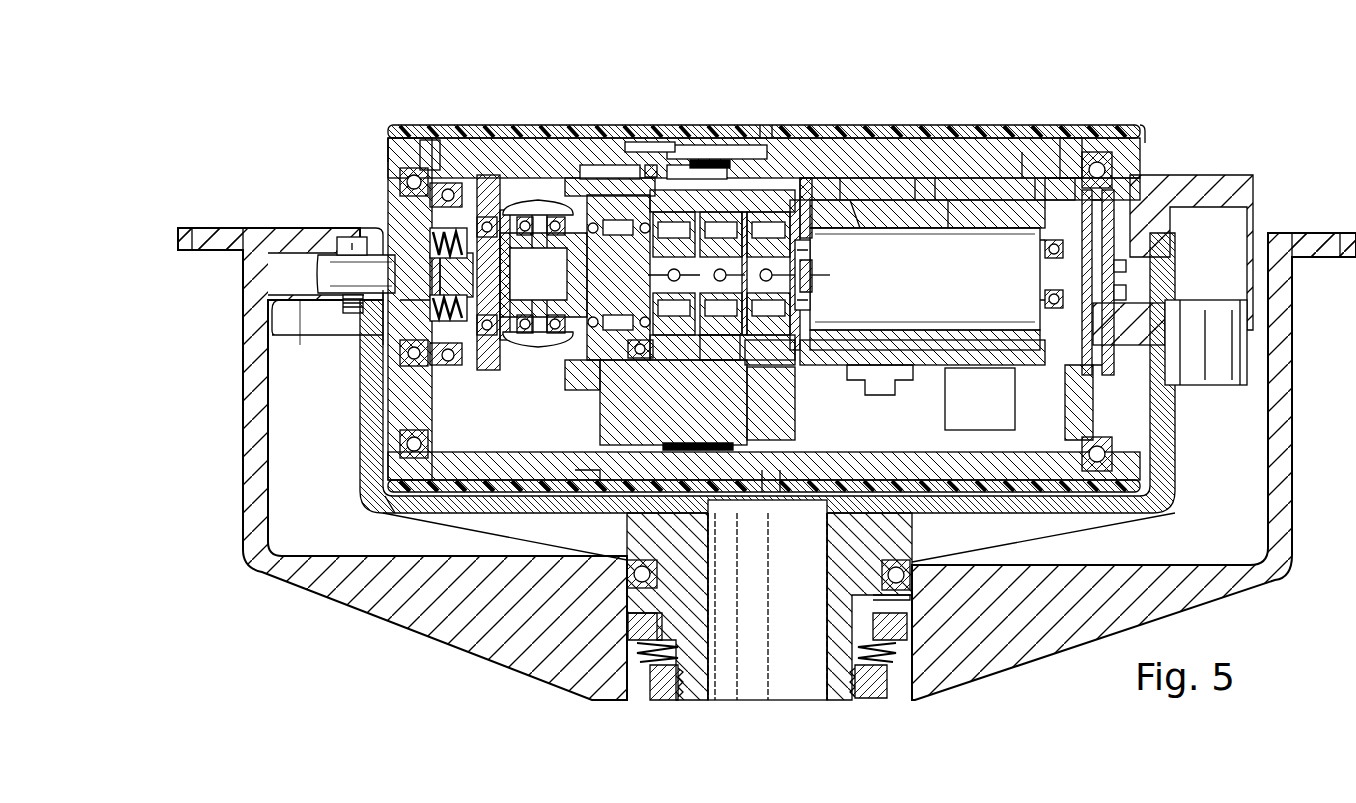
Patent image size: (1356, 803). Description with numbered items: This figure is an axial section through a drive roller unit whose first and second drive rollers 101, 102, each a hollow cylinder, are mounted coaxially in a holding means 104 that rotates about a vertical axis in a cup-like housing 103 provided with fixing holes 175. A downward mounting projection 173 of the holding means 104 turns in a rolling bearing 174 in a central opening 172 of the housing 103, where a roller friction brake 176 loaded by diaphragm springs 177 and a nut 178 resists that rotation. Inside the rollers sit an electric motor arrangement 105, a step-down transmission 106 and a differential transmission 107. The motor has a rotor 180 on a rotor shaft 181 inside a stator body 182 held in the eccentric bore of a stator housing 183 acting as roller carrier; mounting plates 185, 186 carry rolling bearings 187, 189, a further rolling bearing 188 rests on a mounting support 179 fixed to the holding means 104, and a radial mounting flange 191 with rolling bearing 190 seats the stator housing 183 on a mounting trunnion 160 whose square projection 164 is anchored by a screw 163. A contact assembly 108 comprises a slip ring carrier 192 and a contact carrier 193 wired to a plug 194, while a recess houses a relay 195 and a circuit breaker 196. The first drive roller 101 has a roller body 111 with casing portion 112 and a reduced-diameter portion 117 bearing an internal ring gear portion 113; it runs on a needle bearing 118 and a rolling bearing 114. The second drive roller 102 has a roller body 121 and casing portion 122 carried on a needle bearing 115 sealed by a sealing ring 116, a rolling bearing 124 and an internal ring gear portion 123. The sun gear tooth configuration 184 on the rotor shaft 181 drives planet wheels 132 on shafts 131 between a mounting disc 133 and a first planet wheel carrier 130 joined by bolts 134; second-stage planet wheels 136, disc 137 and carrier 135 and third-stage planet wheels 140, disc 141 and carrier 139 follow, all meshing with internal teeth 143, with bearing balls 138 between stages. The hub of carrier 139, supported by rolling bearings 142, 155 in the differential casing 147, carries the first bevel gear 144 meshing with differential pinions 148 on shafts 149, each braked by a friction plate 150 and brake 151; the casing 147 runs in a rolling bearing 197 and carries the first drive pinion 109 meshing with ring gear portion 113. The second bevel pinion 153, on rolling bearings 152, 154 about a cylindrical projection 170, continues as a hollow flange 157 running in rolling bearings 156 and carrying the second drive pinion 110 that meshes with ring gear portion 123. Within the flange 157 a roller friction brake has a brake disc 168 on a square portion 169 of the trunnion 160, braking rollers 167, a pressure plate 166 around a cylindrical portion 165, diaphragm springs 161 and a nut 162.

The first drive roller 101 is at (1135, 127).
The second drive roller 102 is at (408, 123).
The housing 103 is at (262, 578).
The holding means 104 is at (362, 482).
The electric motor arrangement 105 is at (895, 200).
The step-down transmission 106 is at (815, 182).
The differential transmission 107 is at (541, 200).
The contact assembly 108 is at (1122, 217).
The first drive pinion 109 is at (622, 190).
The second drive pinion 110 is at (465, 152).
The roller body 111 is at (1053, 190).
The roller casing portion 112 is at (1090, 152).
The internally toothed ring gear portion 113 is at (603, 498).
The rolling bearing 114 is at (1112, 166).
The needle bearing 115 is at (702, 165).
The sealing ring 116 is at (766, 125).
The reduced-diameter portion 117 is at (755, 200).
The needle bearing 118 is at (652, 172).
The roller body 121 is at (392, 152).
The roller casing portion 122 is at (392, 138).
The internally toothed ring gear portion 123 is at (395, 510).
The rolling bearing 124 is at (403, 176).
The first planet wheel carrier 130 is at (802, 362).
The shafts 131 is at (840, 242).
The planet wheels 132 is at (794, 205).
The radial mounting disc 133 is at (842, 188).
The bolts 134 is at (820, 336).
The planet wheel carrier of the second transmission stage 135 is at (748, 416).
The planet wheels of the second stage 136 is at (718, 212).
The radial mounting disc 137 is at (746, 210).
The bearing ball 138 is at (638, 292).
The planet wheel carrier of the third transmission stage 139 is at (662, 350).
The planet wheels of the third stage 140 is at (676, 212).
The radial mounting disc 141 is at (722, 352).
The rolling bearing 142 is at (640, 357).
The internal teeth 143 is at (765, 367).
The first bevel gear 144 is at (604, 238).
The differential casing 147 is at (578, 185).
The differential pinions 148 is at (560, 215).
The shaft 149 is at (540, 540).
The friction plate 150 is at (540, 195).
The brake 151 is at (492, 222).
The rolling bearing 152 is at (505, 340).
The second bevel pinion 153 is at (410, 402).
The rolling bearing 154 is at (490, 210).
The rolling bearing 155 is at (600, 392).
The rolling bearings 156 is at (446, 185).
The hollow circumferentially extending flange 157 is at (430, 200).
The mounting trunnion 160 is at (312, 273).
The diaphragm springs 161 is at (440, 270).
The nut 162 is at (400, 262).
The screw 163 is at (330, 237).
The square projection 164 is at (344, 303).
The cylindrical portion 165 is at (338, 240).
The pressure plate 166 is at (450, 356).
The braking rollers 167 is at (430, 332).
The brake disc 168 is at (435, 152).
The square portion 169 is at (340, 330).
The cylindrical projection 170 is at (268, 348).
The central opening 172 is at (905, 692).
The mounting projection 173 is at (830, 695).
The rolling bearing 174 is at (908, 584).
The fixing holes 175 is at (198, 238).
The roller friction brake 176 is at (628, 648).
The diaphragm springs 177 is at (908, 665).
The nut 178 is at (668, 695).
The mounting support 179 is at (1245, 194).
The rotor 180 is at (950, 293).
The rotor shaft 181 is at (805, 292).
The stator body 182 is at (948, 215).
The stator housing 183 is at (975, 190).
The external tooth configuration 184 is at (820, 285).
The radial mounting plate 185 is at (1022, 172).
The mounting plate 186 is at (856, 220).
The rolling bearing 187 is at (1045, 249).
The rolling bearing 188 is at (1118, 407).
The rolling bearing 189 is at (803, 260).
The rolling bearing 190 is at (430, 300).
The radial mounting flange 191 is at (400, 444).
The slip ring carrier 192 is at (1115, 294).
The contact carrier 193 is at (1126, 270).
The plug 194 is at (1245, 352).
The relay 195 is at (985, 423).
The thermally operated automatic circuit breaker 196 is at (885, 402).
The rolling bearing 197 is at (642, 145).